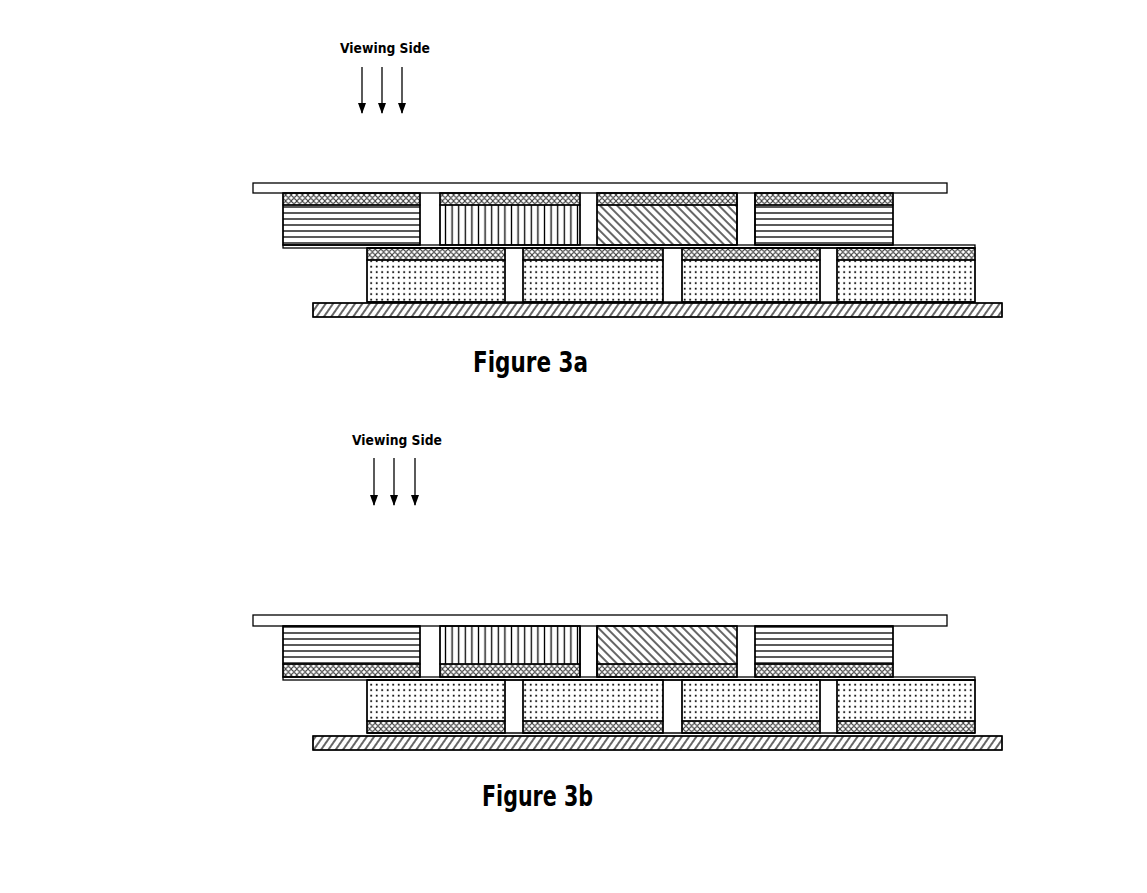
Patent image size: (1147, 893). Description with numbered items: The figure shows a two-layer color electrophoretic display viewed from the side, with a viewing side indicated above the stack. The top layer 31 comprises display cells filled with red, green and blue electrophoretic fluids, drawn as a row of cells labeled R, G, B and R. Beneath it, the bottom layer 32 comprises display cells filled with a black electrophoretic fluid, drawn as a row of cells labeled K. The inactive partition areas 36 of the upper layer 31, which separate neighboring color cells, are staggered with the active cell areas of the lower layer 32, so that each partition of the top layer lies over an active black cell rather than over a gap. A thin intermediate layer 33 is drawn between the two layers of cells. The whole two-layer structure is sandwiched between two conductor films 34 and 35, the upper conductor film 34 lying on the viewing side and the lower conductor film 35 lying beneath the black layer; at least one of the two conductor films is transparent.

In FIG. 3A, the top layer 31 is at (945, 220).
In FIG. 3B, the top layer 31 is at (932, 643).
In FIG. 3A, the bottom layer 32 is at (988, 285).
In FIG. 3B, the bottom layer 32 is at (982, 693).
In FIG. 3A, the intermediate electrode/adhesive layer 33 is at (363, 250).
In FIG. 3B, the intermediate electrode/adhesive layer 33 is at (363, 683).
In FIG. 3A, the conductor film 34 is at (327, 183).
In FIG. 3B, the conductor film 34 is at (313, 615).
In FIG. 3A, the conductor film 35 is at (320, 321).
In FIG. 3B, the conductor film 35 is at (320, 752).
In FIG. 3A, the inactive partition areas 36 is at (745, 223).
In FIG. 3B, the inactive partition areas 36 is at (592, 640).